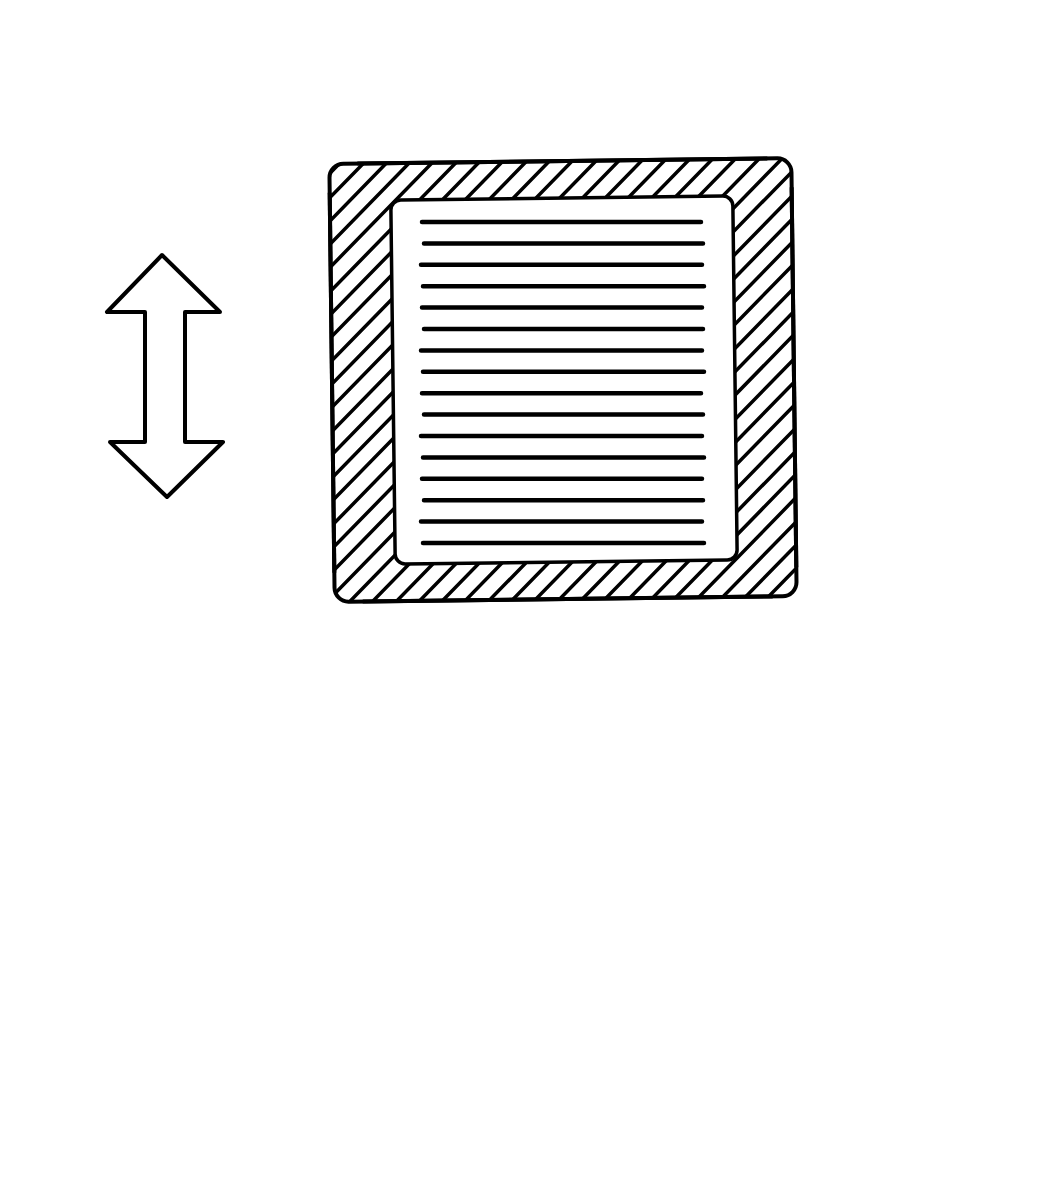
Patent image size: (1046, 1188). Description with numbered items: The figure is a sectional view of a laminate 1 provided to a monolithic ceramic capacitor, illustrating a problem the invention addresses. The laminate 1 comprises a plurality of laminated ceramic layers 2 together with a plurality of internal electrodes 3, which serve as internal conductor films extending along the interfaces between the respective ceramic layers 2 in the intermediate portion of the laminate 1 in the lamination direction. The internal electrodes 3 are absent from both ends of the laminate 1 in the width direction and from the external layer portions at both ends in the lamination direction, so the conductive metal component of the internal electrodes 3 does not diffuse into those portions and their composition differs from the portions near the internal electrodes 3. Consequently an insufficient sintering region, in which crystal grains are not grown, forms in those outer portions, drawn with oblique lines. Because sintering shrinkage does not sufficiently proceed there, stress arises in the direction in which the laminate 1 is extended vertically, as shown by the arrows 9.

The laminate 1 is at (392, 48).
The ceramic layers 2 is at (578, 532).
The internal electrodes 3 is at (552, 241).
The arrows 9 is at (157, 377).